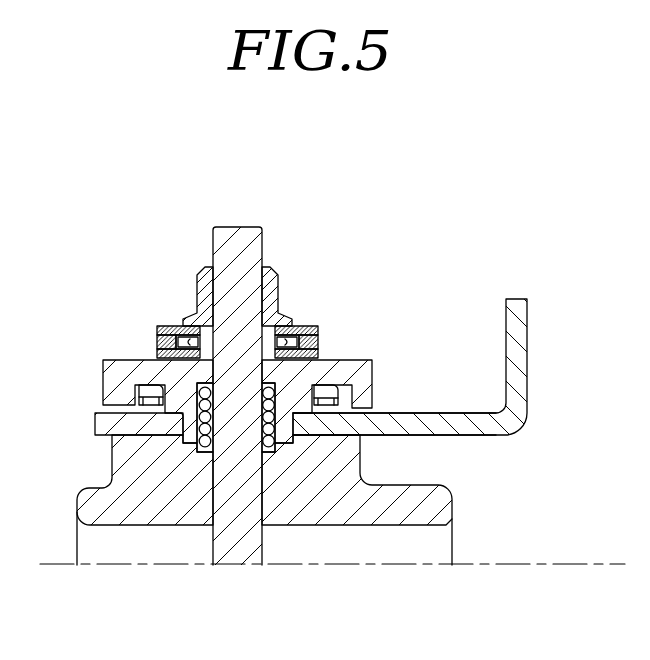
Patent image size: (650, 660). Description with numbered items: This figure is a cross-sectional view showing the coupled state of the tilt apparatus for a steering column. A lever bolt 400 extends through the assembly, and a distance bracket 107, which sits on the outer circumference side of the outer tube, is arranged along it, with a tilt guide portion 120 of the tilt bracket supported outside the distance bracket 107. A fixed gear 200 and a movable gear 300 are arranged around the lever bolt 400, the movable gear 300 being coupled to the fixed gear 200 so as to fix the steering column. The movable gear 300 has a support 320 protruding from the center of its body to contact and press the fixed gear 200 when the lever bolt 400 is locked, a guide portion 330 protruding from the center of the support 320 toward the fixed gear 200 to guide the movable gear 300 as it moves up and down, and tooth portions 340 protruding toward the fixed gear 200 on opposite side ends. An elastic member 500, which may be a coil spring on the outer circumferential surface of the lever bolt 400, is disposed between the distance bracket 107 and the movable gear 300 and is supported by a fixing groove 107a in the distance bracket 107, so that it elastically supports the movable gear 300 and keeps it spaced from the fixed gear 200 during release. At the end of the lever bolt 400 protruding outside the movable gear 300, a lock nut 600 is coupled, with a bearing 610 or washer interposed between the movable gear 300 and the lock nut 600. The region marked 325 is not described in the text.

The lever bolt 400 is at (233, 229).
The elastic member 500 is at (195, 362).
The lock nut 600 is at (278, 282).
The bearing 610 is at (330, 304).
The bracket boss 325 is at (147, 382).
The movable gear 300 is at (337, 372).
The support 320 is at (180, 396).
The fixed gear 200 is at (327, 383).
The guide portion 330 is at (125, 433).
The tooth portions 340 is at (363, 388).
The tilt guide portions 120 is at (447, 428).
The distance bracket 107 is at (127, 463).
The fixing groove 107a is at (205, 455).